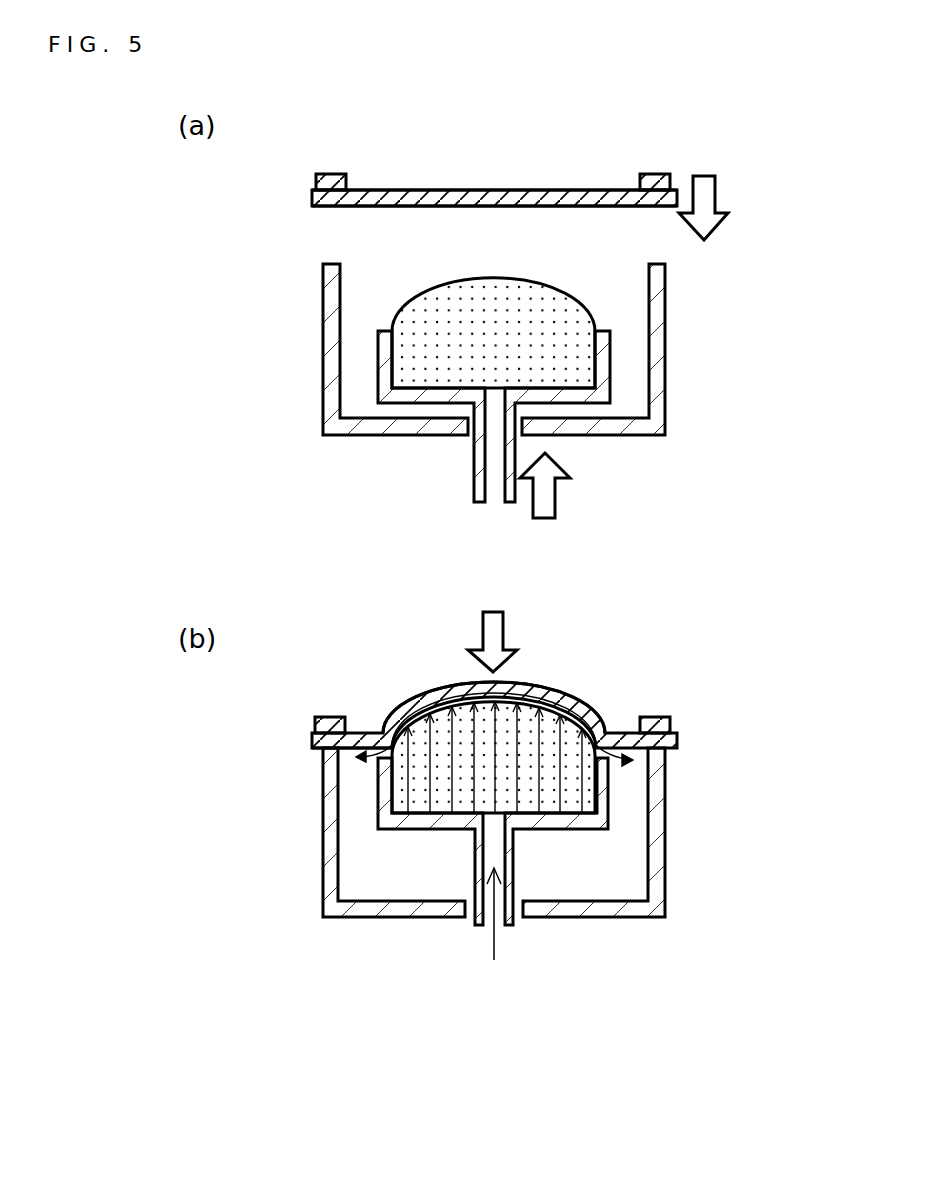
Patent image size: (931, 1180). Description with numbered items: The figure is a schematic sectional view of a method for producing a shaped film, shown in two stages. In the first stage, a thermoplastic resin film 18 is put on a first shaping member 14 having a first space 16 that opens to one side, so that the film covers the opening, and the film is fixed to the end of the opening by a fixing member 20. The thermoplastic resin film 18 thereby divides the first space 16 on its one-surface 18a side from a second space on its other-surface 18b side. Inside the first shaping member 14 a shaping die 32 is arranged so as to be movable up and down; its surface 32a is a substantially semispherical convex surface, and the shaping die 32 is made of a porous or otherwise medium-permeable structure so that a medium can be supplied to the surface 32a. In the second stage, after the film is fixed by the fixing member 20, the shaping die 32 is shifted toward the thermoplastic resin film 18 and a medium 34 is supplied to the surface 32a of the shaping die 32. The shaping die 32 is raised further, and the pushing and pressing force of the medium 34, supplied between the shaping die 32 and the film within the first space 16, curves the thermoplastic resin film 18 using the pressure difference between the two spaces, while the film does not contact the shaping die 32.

The first shaping member 14 is at (665, 393).
The first space 16 is at (355, 393).
The thermoplastic resin film 18 is at (313, 205).
The one surface of the thermoplastic resin film 18a is at (360, 207).
The other surface of the thermoplastic resin film 18b is at (550, 190).
The fixing member 20 is at (332, 175).
The shaping die 32 is at (610, 371).
The surface of the shaping die 32a is at (550, 287).
The medium 34 is at (493, 932).